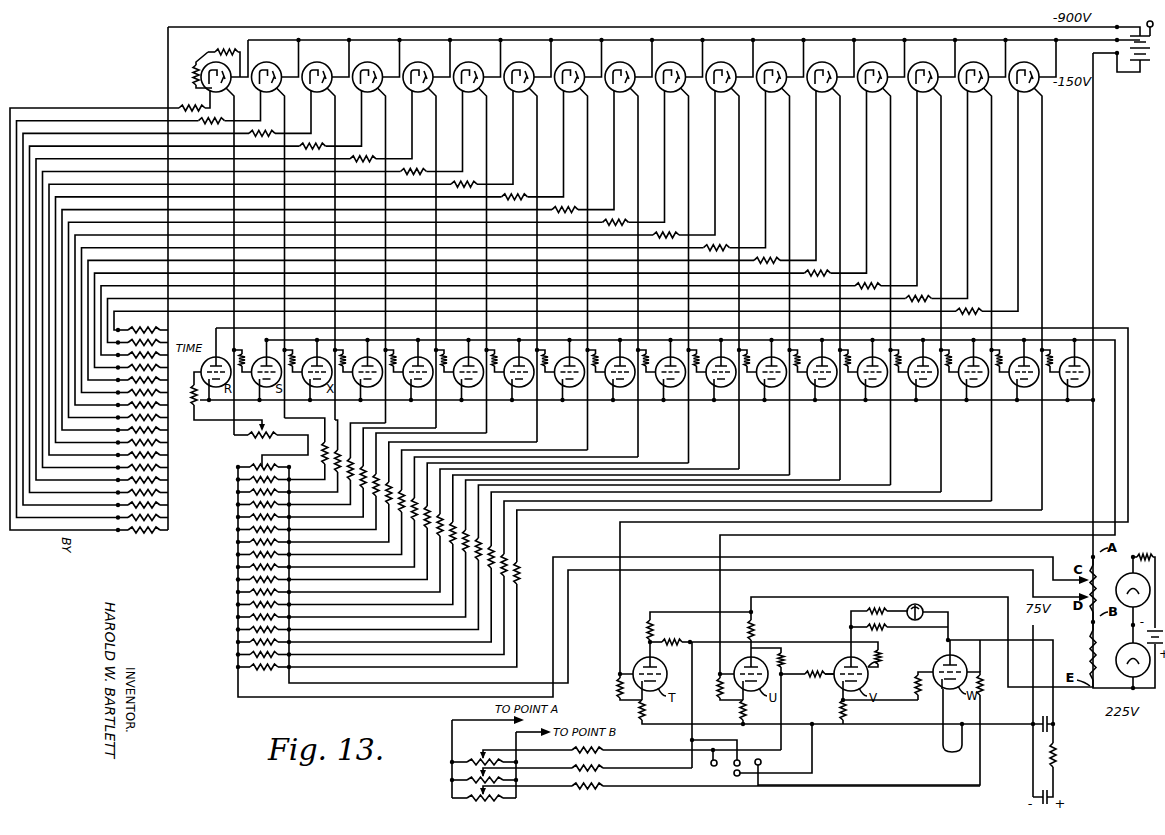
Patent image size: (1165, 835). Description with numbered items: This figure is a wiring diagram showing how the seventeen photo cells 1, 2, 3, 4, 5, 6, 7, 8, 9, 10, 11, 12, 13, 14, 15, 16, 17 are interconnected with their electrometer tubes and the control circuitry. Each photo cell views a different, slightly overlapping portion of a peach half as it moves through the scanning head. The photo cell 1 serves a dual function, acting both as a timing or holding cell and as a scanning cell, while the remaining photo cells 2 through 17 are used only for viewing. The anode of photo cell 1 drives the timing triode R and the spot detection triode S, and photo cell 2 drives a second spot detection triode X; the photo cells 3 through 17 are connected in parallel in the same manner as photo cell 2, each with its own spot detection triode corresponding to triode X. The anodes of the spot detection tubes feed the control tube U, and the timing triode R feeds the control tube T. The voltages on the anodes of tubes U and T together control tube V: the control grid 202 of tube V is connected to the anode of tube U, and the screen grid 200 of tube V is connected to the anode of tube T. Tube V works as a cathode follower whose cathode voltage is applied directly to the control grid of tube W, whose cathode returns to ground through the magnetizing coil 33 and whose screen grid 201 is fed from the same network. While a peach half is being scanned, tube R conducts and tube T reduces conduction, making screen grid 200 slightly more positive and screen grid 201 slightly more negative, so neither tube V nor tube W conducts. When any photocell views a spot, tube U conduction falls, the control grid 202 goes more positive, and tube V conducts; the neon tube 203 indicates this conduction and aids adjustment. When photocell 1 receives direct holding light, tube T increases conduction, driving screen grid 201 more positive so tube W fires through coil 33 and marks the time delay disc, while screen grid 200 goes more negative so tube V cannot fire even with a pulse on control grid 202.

The photo cell 1 is at (159, 285).
The photo cell 2 is at (172, 278).
The photo cell 3 is at (188, 271).
The photo cell 4 is at (217, 271).
The photo cell 5 is at (245, 277).
The photo cell 6 is at (274, 284).
The photo cell 7 is at (302, 290).
The photo cell 8 is at (331, 296).
The photo cell 9 is at (359, 302).
The photo cell 10 is at (388, 309).
The photo cell 11 is at (416, 315).
The photo cell 12 is at (445, 321).
The photo cell 13 is at (473, 327).
The photo cell 14 is at (502, 334).
The photo cell 15 is at (530, 340).
The photo cell 16 is at (559, 346).
The photo cell 17 is at (587, 352).
The magnetizing coil 33 is at (954, 736).
The screen grid of tube V 200 is at (891, 655).
The screen grid of tube W 201 is at (880, 712).
The control grid of tube V 202 is at (813, 690).
The neon tube 203 is at (944, 609).